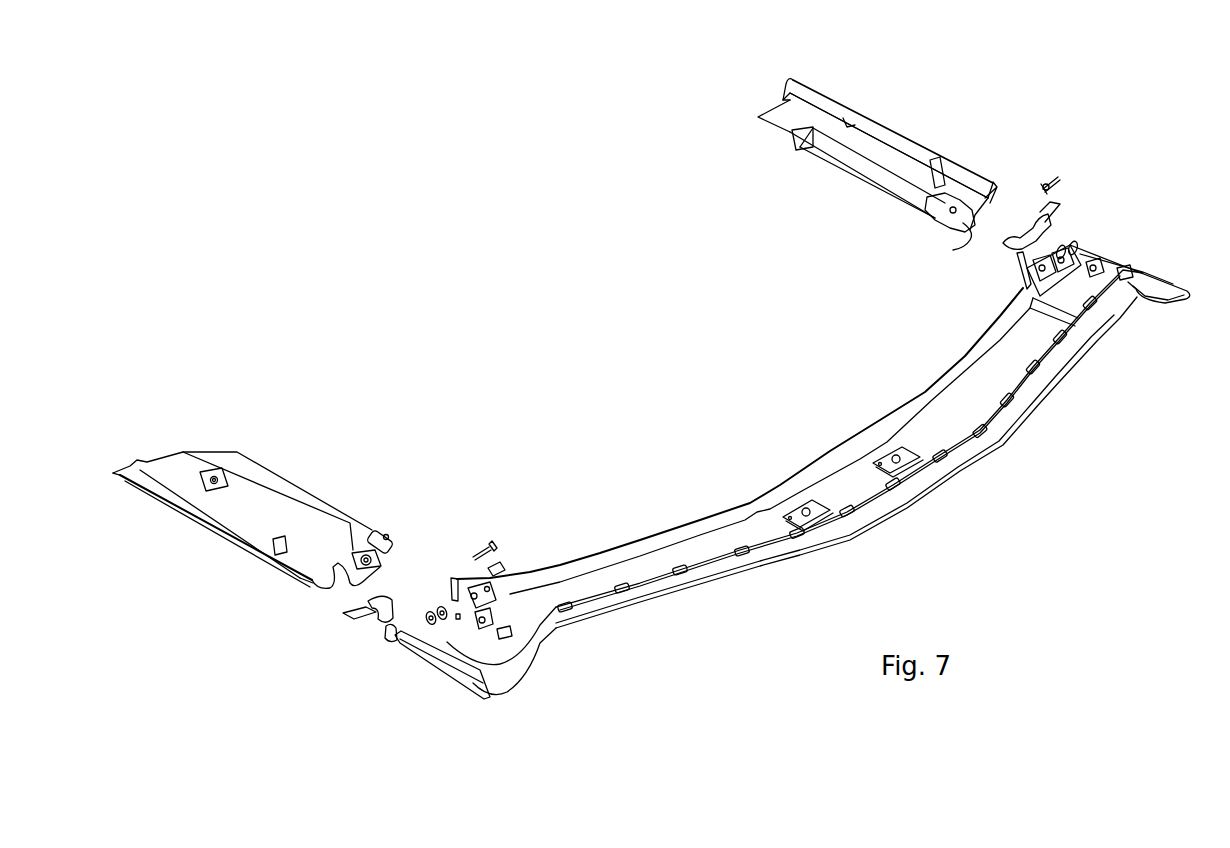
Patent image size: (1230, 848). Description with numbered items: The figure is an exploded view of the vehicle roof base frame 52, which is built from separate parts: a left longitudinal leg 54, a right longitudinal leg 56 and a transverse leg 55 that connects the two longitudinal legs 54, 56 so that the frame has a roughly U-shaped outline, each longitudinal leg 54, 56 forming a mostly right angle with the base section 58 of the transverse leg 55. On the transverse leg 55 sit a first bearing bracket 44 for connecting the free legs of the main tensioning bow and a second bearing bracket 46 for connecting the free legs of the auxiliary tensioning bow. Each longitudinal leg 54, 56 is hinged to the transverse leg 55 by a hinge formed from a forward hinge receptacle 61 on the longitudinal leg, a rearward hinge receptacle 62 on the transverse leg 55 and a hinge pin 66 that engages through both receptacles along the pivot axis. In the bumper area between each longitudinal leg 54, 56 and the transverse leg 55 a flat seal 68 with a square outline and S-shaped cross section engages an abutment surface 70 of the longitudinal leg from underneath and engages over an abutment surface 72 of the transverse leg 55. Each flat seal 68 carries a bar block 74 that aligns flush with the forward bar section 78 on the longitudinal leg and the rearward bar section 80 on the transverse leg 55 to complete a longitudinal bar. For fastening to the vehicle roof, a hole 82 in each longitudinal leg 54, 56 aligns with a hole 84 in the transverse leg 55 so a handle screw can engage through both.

The first bearing bracket 44 is at (432, 620).
The second bearing bracket 46 is at (490, 615).
The vehicle roof base frame 52 is at (888, 127).
The left longitudinal leg 54 is at (577, 353).
The transverse leg 55 is at (1065, 383).
The right longitudinal leg 56 is at (877, 118).
The base section 58 is at (923, 493).
The forward hinge receptacle 61 is at (390, 527).
The rearward hinge receptacle 62 is at (498, 560).
The hinge pin 66 is at (485, 540).
The flat seal 68 is at (362, 619).
The abutment surface 70 is at (307, 586).
The abutment surface 72 is at (388, 627).
The bar block 74 is at (407, 597).
The forward bar section 78 is at (248, 545).
The rearward bar section 80 is at (467, 627).
The hole 82 is at (365, 555).
The hole 84 is at (458, 614).